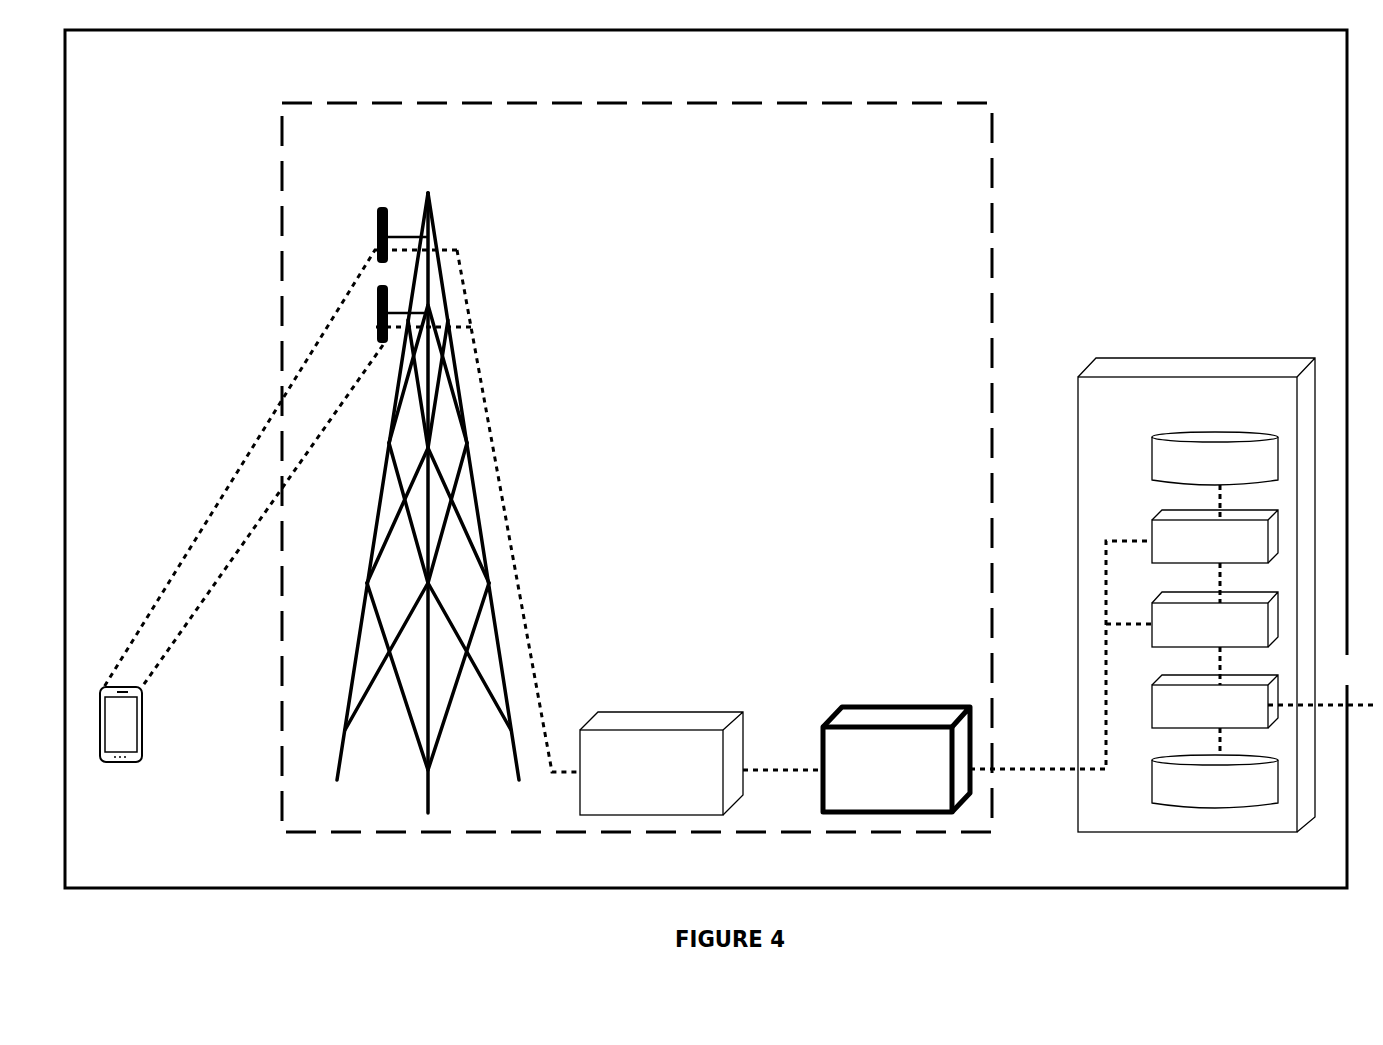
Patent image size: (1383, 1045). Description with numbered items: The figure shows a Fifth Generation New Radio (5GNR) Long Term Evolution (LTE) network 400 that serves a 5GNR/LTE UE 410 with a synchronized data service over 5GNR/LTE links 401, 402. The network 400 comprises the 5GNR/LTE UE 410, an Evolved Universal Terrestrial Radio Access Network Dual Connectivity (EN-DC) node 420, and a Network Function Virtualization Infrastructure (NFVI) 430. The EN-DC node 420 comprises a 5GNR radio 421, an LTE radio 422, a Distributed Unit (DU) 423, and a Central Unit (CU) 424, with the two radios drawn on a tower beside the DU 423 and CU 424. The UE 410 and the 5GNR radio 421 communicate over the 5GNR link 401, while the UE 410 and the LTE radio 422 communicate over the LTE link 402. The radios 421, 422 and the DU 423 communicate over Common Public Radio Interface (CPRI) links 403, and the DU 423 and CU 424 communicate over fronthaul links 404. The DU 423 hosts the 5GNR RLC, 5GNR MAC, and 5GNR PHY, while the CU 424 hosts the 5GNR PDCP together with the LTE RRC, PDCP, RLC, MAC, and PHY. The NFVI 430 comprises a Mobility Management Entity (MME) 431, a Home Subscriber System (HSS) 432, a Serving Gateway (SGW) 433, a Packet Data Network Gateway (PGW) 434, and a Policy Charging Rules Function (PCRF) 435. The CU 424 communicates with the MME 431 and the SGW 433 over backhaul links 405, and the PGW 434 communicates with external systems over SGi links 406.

The Fifth Generation New Radio (5GNR) Long Term Evolution (LTE) network 400 is at (706, 459).
The Evolved Universal Terrestrial Radio Access Network Dual Connectivity (EN-DC) nod 420 is at (637, 467).
The 5GNR radio 421 is at (381, 208).
The LTE radio 422 is at (380, 295).
The 5GNR link 401 is at (182, 560).
The LTE link 402 is at (203, 603).
The Common Public Radio Interface (CPRI) links 403 is at (512, 548).
The fronthaul links 404 is at (754, 770).
The backhaul links 405 is at (1010, 769).
The SGi links 406 is at (1327, 693).
The 5GNR/LTE UE 410 is at (143, 722).
The Distributed Unit (DU) 423 is at (661, 763).
The Central Unit (CU) 424 is at (896, 759).
The Network Function Virtualization Infrastructure (NFVI) 430 is at (1196, 595).
The Mobility Management Entity (MME) 431 is at (1215, 536).
The Home Subscriber System (HSS) 432 is at (1215, 458).
The Serving Gateway (SGW) 433 is at (1215, 619).
The Packet Data Network Gateway (PGW) 434 is at (1215, 701).
The Policy Charging Rules Function (PCRF) 435 is at (1215, 781).